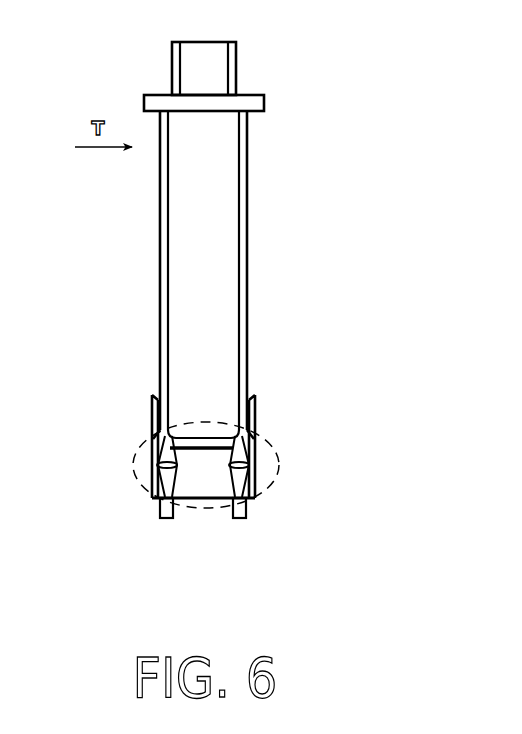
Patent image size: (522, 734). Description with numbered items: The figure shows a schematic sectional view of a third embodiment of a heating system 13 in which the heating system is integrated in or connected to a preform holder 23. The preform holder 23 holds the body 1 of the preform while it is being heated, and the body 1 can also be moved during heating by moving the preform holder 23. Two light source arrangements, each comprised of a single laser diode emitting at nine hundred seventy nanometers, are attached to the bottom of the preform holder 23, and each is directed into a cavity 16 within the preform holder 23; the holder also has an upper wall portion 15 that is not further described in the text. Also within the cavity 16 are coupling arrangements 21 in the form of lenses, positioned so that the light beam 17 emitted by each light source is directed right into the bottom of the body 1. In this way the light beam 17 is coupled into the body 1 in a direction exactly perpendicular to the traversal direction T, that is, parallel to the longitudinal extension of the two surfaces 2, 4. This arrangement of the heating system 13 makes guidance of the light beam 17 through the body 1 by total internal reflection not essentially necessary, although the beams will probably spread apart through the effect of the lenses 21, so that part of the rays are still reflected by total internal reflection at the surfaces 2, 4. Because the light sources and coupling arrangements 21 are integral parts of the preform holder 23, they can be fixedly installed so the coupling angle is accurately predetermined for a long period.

The body 1 is at (305, 140).
The surface 2 is at (247, 270).
The surface 4 is at (168, 253).
The heating system 13 is at (343, 447).
The right holder wall 15 is at (255, 433).
The cavity 16 is at (156, 482).
The light beam 17 is at (248, 449).
The coupling arrangement 21 is at (249, 465).
The preform holder 23 is at (193, 488).